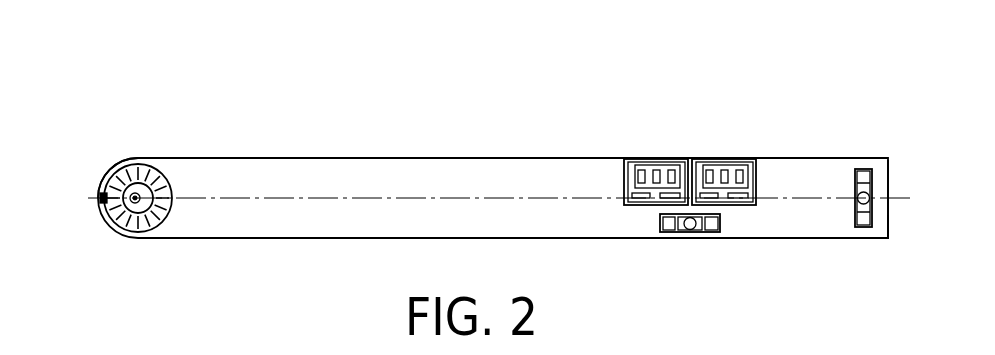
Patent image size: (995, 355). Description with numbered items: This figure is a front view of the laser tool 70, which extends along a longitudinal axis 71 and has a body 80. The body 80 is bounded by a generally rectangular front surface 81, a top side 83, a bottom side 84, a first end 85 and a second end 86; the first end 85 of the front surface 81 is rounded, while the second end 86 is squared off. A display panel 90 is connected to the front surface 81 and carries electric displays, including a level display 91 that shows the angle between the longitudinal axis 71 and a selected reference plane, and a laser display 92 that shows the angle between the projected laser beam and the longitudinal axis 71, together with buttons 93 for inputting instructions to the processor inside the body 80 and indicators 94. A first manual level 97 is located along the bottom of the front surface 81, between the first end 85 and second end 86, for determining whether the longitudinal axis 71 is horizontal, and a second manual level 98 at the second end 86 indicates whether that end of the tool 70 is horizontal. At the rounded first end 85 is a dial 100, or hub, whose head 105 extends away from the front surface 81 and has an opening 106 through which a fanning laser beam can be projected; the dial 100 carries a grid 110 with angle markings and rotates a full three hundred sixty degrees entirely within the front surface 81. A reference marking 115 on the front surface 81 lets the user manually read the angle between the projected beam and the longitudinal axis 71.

The laser tool 70 is at (496, 121).
The longitudinal axis 71 is at (898, 198).
The body 80 is at (428, 157).
The front surface 81 is at (233, 225).
The top side 83 is at (318, 157).
The bottom side 84 is at (320, 238).
The first end 85 is at (123, 160).
The second end 86 is at (887, 222).
The display panel 90 is at (692, 133).
The level display 91 is at (637, 158).
The laser display 92 is at (738, 164).
The button 93 is at (645, 196).
The indicator 94 is at (707, 178).
The first manual level 97 is at (690, 251).
The second manual level 98 is at (863, 173).
The dial 100 is at (133, 165).
The head 105 is at (145, 212).
The opening 106 is at (131, 212).
The grid 110 is at (151, 170).
The reference marking 115 is at (100, 194).